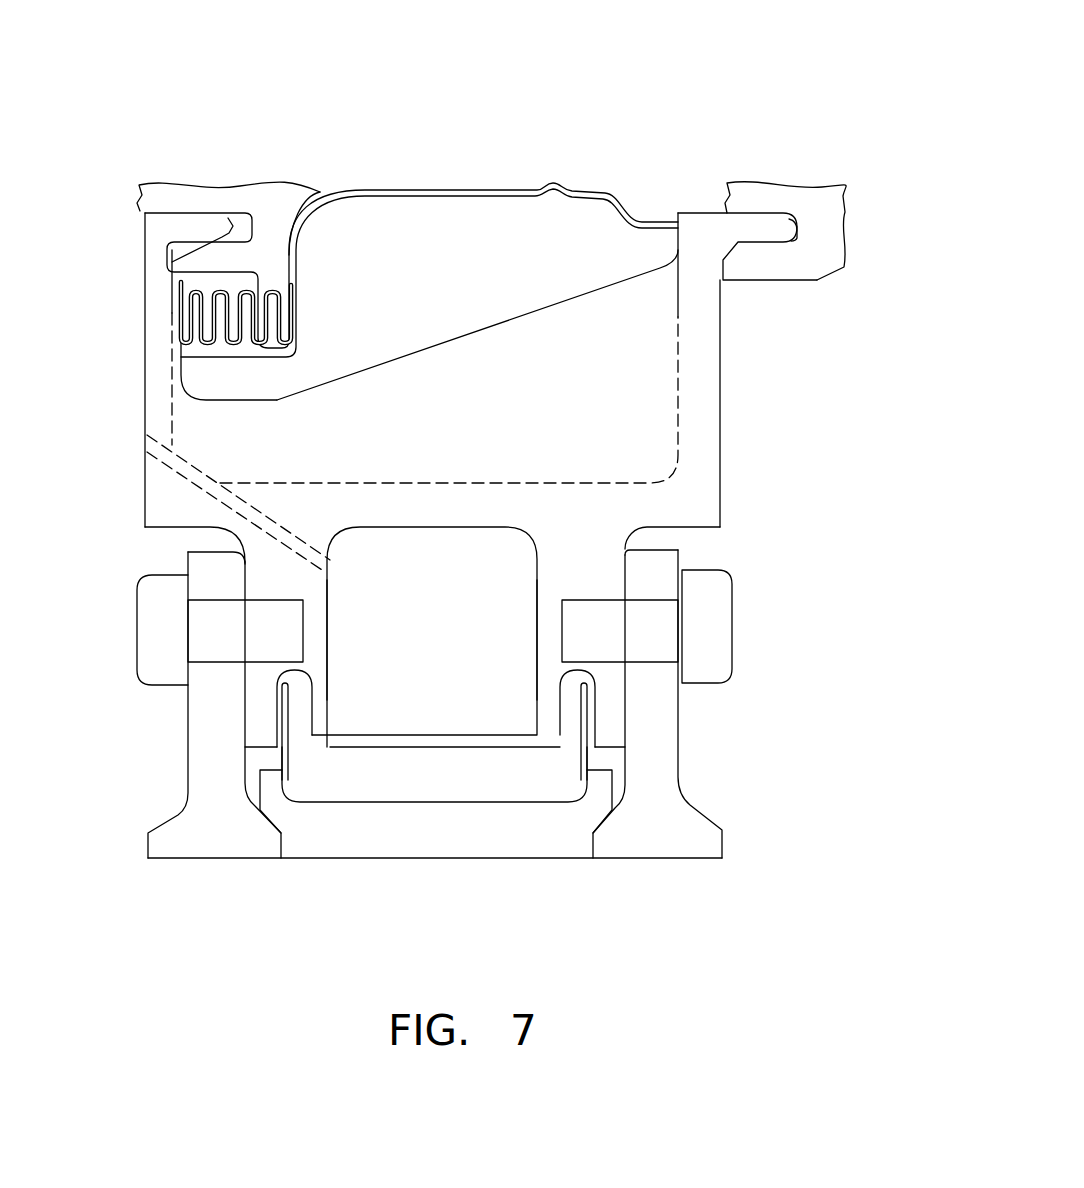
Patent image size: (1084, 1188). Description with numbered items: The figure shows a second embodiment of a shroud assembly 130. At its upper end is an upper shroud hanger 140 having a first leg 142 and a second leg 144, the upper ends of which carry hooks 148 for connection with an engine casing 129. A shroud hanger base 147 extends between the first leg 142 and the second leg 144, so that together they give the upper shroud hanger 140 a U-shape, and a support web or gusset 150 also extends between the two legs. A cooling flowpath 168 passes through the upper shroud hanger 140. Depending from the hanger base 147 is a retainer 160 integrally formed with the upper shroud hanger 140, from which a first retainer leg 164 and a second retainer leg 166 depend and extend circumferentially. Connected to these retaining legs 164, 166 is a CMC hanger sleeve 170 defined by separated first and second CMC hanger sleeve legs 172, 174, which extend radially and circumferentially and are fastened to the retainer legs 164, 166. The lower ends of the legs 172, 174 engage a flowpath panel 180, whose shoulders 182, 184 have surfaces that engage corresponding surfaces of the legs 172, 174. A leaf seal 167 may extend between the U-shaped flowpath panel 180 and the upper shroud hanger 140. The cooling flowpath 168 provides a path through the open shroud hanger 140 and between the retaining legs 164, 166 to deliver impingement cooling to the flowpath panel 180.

The shroud assembly 130 is at (699, 71).
The engine casing 129 is at (223, 200).
The hooks 148 is at (195, 228).
The first leg 142 is at (162, 342).
The support web or gusset 150 is at (538, 397).
The second leg 144 is at (706, 398).
The upper shroud hanger 140 is at (759, 449).
The shroud hanger base 147 is at (430, 498).
The cooling flowpath 168 is at (196, 468).
The retainer 160 is at (337, 667).
The first retainer leg 164 is at (290, 574).
The second retainer leg 166 is at (568, 560).
The first CMC hanger sleeve leg 172 is at (158, 748).
The second CMC hanger sleeve leg 174 is at (690, 709).
The CMC hanger sleeve 170 is at (714, 551).
The leaf seal 167 is at (292, 754).
The flowpath panel 180 is at (418, 842).
The shoulder 182 is at (262, 813).
The shoulder 184 is at (610, 812).